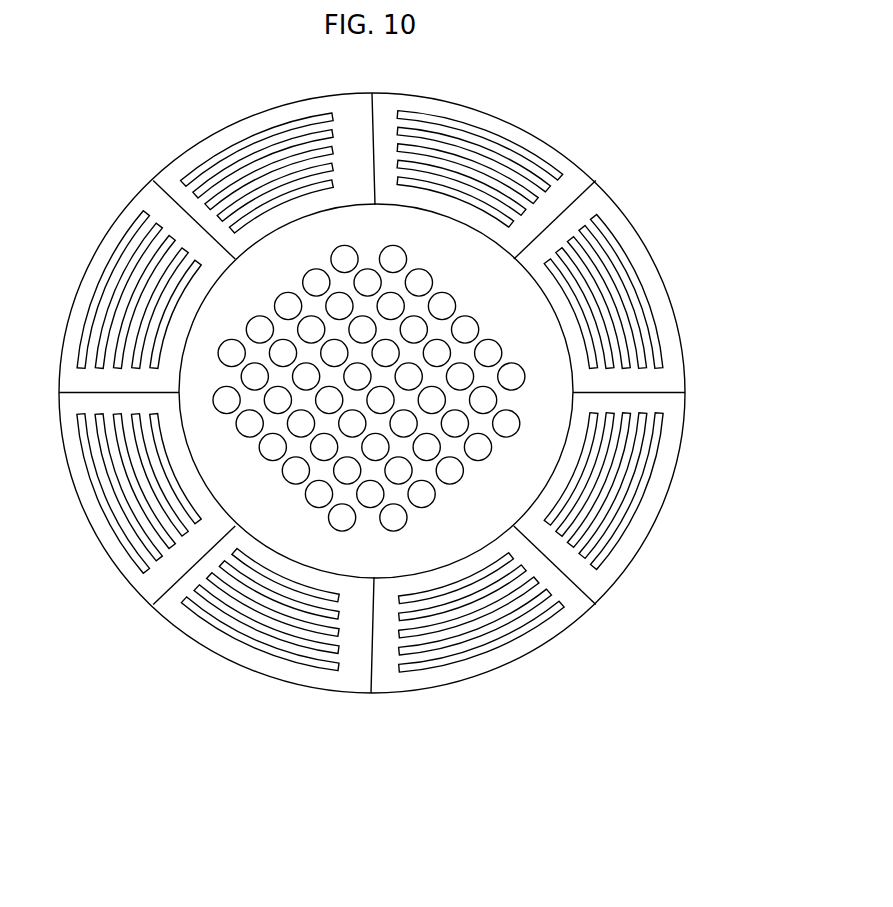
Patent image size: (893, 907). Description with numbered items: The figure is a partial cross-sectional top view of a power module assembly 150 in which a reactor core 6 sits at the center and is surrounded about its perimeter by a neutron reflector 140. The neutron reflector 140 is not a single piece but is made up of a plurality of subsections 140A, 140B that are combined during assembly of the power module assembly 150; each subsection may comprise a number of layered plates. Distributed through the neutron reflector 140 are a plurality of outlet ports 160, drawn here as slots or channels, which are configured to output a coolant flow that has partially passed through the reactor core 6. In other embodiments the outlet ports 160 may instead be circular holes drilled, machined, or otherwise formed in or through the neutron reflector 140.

The power module assembly 150 is at (383, 394).
The neutron reflector 140 is at (383, 405).
The subsection 140A is at (503, 151).
The subsection 140B is at (626, 291).
The outlet port 160 is at (255, 666).
The reactor core 6 is at (192, 557).